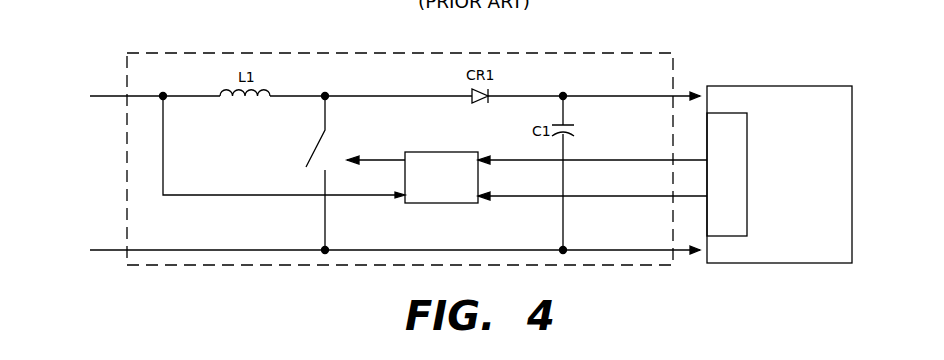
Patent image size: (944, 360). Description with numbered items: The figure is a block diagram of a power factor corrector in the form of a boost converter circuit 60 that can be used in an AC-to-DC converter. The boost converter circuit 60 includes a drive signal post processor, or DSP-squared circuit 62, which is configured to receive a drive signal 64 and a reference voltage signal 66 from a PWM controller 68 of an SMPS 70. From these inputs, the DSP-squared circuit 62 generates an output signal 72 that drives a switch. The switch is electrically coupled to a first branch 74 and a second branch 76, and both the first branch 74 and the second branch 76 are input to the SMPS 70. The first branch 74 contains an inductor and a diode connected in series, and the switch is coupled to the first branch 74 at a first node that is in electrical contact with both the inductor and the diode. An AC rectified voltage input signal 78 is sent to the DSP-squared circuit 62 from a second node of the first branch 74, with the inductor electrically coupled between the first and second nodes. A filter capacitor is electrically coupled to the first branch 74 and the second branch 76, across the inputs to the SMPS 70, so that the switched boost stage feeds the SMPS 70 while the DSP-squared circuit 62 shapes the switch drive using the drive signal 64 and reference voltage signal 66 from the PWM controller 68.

The boost converter circuit 60 is at (188, 53).
The drive signal post processor (DSP²) circuit 62 is at (422, 152).
The drive signal 64 is at (587, 157).
The reference voltage (V_Ref) signal 66 is at (597, 207).
The PWM controller 68 is at (747, 124).
The SMPS 70 is at (757, 86).
The output signal 72 is at (385, 155).
The first branch 74 is at (298, 96).
The second branch 76 is at (187, 265).
The AC rectified voltage input signal 78 is at (163, 138).